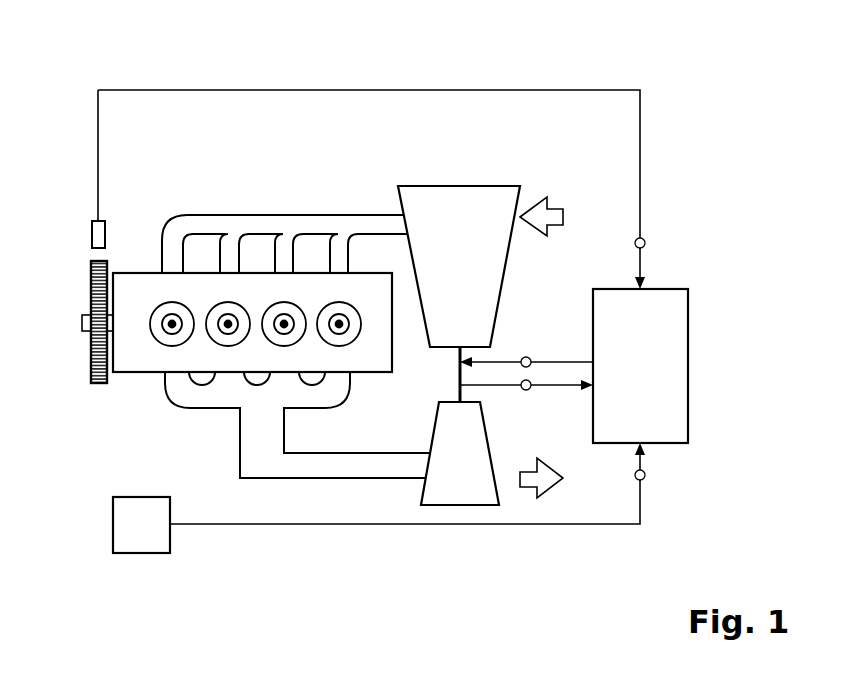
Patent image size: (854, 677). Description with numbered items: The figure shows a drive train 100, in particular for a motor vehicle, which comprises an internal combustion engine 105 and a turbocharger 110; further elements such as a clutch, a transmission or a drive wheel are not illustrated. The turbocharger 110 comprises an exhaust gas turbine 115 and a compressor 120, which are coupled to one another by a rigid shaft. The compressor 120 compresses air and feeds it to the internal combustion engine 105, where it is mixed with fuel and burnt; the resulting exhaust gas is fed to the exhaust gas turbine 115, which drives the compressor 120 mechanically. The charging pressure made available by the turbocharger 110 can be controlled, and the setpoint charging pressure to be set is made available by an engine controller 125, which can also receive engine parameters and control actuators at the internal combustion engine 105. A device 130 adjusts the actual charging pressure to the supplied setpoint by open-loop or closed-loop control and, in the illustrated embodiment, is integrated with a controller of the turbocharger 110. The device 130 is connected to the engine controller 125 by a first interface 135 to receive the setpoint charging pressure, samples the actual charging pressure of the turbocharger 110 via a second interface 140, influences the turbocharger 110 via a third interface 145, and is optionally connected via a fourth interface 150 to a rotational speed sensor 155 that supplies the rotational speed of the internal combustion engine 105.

The drive train 100 is at (613, 64).
The internal combustion engine 105 is at (70, 288).
The turbocharger 110 is at (448, 168).
The exhaust gas turbine 115 is at (420, 496).
The compressor 120 is at (522, 195).
The engine controller 125 is at (112, 525).
The device 130 is at (688, 375).
The first interface 135 is at (646, 475).
The second interface 140 is at (526, 391).
The third interface 145 is at (526, 356).
The fourth interface 150 is at (646, 243).
The rotational speed sensor 155 is at (91, 235).